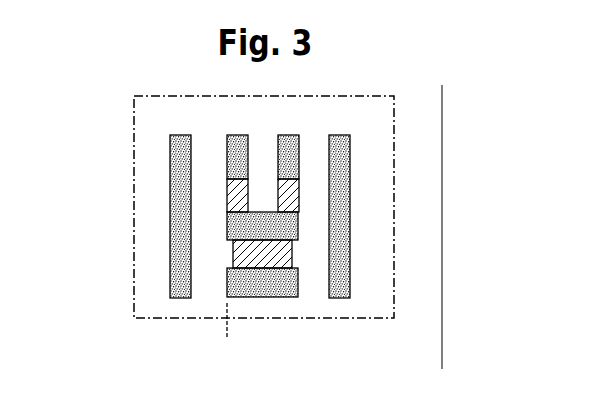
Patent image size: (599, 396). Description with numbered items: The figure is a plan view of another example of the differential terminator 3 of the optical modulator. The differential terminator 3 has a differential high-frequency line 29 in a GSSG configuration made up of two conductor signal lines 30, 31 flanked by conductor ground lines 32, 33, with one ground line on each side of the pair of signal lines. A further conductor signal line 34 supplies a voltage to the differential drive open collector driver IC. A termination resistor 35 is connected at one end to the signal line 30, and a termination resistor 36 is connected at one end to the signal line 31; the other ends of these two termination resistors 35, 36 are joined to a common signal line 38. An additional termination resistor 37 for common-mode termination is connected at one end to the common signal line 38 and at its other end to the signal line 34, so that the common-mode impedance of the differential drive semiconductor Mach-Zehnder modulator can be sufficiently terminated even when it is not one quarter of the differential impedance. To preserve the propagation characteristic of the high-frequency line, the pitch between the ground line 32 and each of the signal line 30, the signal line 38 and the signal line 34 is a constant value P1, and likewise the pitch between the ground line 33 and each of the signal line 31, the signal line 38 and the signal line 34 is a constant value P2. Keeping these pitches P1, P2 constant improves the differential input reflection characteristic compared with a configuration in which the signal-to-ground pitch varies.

The differential terminator 3 is at (394, 138).
The differential high-frequency line 29 is at (250, 121).
The signal line 30 is at (299, 173).
The signal line 31 is at (227, 172).
The ground line 32 is at (351, 294).
The ground line 33 is at (180, 284).
The signal line 34 is at (268, 298).
The termination resistor 35 is at (299, 193).
The termination resistor 36 is at (227, 192).
The termination resistor 37 is at (285, 253).
The common signal line 38 is at (293, 226).
The pitch P1 is at (298, 333).
The pitch P2 is at (193, 333).